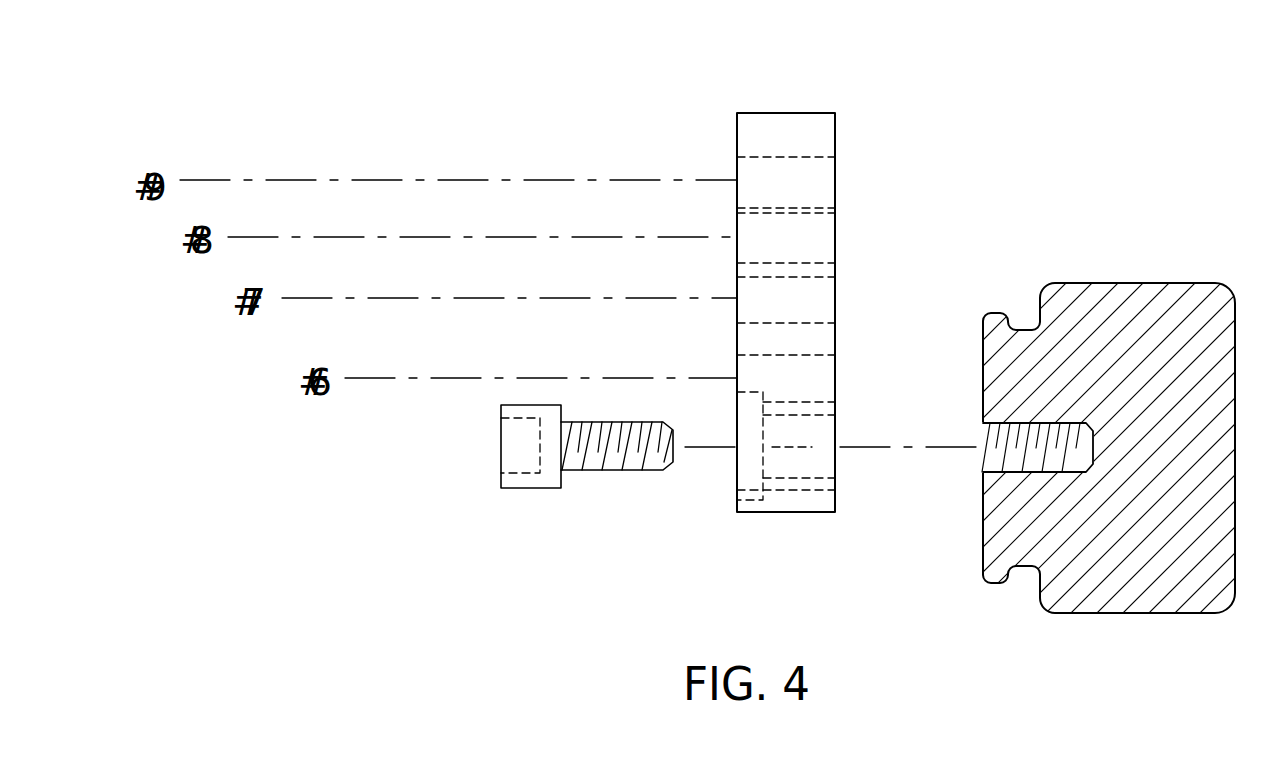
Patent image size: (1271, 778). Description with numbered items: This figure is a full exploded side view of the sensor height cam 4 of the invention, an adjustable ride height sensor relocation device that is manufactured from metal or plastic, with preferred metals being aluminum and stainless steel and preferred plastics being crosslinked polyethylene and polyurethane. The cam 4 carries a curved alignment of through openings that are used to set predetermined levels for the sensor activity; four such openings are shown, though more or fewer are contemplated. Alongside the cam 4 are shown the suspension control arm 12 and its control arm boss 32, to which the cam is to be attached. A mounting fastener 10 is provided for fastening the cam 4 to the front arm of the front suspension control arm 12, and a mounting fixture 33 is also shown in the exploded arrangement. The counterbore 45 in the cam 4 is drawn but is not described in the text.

The mounting fastener 10 is at (841, 96).
The sensor height cam 4 is at (820, 185).
The counterbore 45 is at (756, 445).
The mounting fixture 33 is at (515, 480).
The suspension control arm 12 is at (1148, 307).
The control arm boss 32 is at (1000, 555).